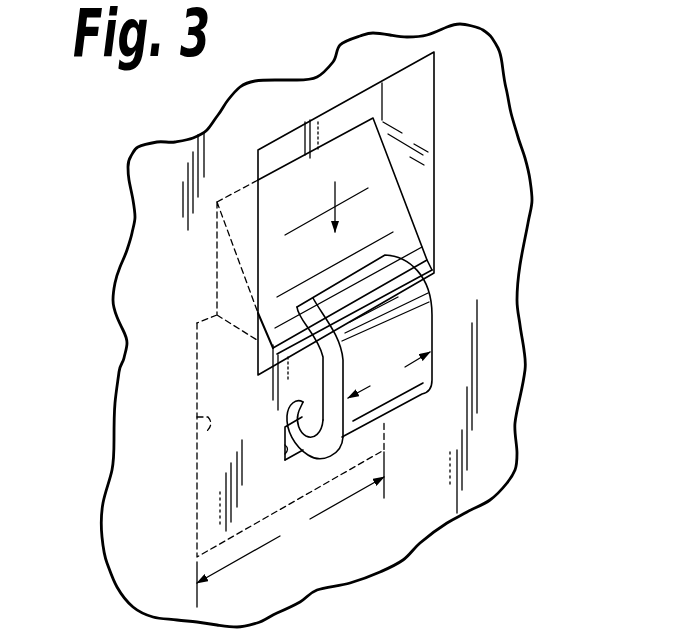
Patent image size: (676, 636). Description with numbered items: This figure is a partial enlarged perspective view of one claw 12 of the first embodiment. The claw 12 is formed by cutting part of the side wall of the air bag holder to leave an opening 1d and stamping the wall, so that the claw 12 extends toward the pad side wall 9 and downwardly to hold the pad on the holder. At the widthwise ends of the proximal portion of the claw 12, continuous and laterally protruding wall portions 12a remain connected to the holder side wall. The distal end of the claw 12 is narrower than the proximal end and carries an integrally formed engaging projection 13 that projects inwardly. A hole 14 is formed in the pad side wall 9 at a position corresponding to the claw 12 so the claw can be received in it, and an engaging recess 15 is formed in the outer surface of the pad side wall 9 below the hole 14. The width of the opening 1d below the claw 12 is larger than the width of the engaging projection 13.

The pad side wall 9 is at (525, 333).
The claw 12 is at (413, 237).
The laterally protruding wall portion 12a is at (233, 295).
The engaging projection 13 is at (277, 409).
The hole 14 is at (261, 253).
The engaging recess 15 is at (284, 452).
The opening 1d is at (200, 433).